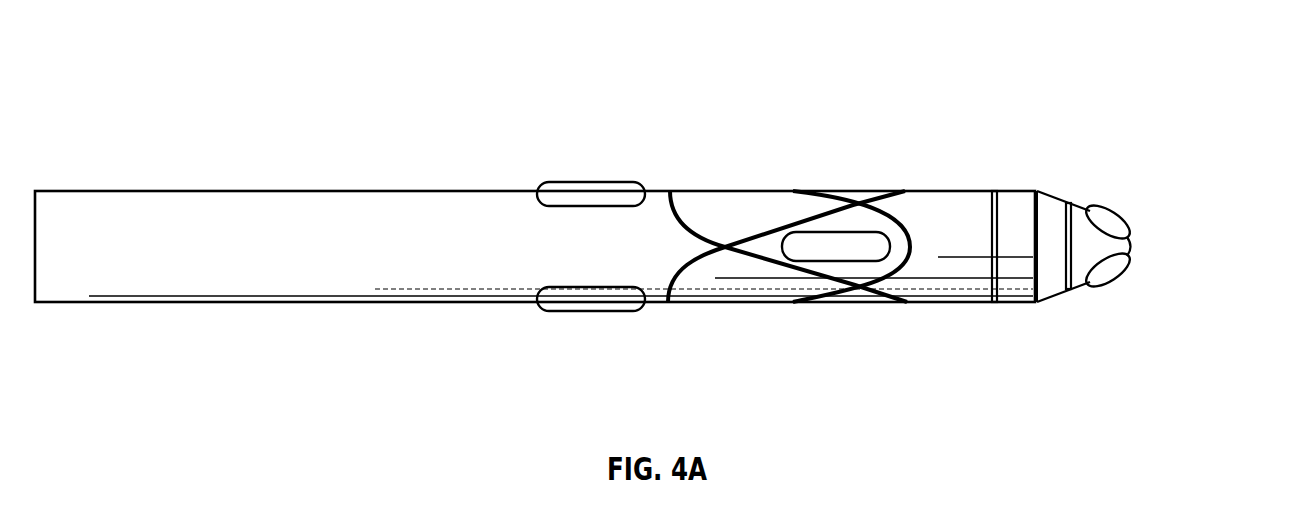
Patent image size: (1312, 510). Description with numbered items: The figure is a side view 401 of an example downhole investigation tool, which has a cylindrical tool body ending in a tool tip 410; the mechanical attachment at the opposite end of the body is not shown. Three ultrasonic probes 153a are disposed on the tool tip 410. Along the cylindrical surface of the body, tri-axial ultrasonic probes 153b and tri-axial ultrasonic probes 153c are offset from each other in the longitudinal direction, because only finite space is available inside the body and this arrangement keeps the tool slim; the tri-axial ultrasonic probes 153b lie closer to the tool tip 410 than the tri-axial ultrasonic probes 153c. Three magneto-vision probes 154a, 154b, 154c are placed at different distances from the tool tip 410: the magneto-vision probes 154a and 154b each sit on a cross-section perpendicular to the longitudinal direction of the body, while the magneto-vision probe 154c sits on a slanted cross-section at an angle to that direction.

The side view 401 is at (1193, 63).
The tool tip 410 is at (1083, 203).
The ultrasonic probes 153a is at (1105, 277).
The tri-axial ultrasonic probes 153b is at (848, 250).
The tri-axial ultrasonic probes 153c is at (592, 303).
The magneto-vision probe 154a is at (1070, 201).
The magneto-vision probe 154b is at (993, 191).
The magneto-vision probe 154c is at (717, 225).